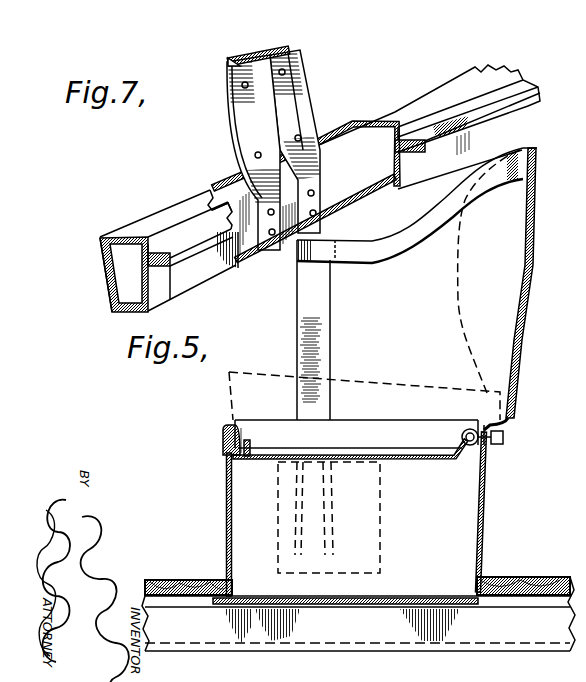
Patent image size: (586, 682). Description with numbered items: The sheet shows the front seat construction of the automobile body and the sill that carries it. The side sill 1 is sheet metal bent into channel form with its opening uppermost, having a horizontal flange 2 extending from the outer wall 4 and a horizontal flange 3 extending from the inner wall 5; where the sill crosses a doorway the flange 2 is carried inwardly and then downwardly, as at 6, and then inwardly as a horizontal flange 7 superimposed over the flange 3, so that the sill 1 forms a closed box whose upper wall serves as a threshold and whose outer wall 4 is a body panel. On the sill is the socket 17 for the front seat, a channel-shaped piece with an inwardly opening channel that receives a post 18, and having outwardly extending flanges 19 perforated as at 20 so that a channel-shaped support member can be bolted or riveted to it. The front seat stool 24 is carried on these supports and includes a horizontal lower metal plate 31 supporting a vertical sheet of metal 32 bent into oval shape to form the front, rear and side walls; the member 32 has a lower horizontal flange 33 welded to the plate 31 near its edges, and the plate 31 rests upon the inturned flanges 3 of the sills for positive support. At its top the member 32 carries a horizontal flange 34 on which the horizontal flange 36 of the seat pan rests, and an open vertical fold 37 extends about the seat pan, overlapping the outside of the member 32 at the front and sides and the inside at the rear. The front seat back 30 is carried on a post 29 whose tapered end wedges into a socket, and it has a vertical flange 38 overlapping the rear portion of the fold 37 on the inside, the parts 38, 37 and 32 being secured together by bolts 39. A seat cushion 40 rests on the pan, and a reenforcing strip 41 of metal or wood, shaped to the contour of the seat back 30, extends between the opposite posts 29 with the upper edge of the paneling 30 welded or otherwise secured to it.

In FIG. 7, the side sill 1 is at (112, 300).
In FIG. 5, the side sill 1 is at (465, 632).
In FIG. 7, the horizontal flange 2 is at (165, 215).
In FIG. 7, the horizontal flange 3 is at (208, 248).
In FIG. 7, the outer wall 4 is at (105, 267).
In FIG. 7, the inner wall 5 is at (188, 274).
In FIG. 7, the downward extension 6 is at (155, 237).
In FIG. 7, the horizontal flange 7 is at (217, 229).
In FIG. 7, the socket 17 is at (239, 56).
In FIG. 5, the post 18 is at (580, 356).
In FIG. 7, the outwardly extending flange 19 is at (230, 103).
In FIG. 7, the perforation 20 is at (230, 74).
In FIG. 5, the front seat stool 24 is at (423, 533).
In FIG. 5, the post 29 is at (313, 322).
In FIG. 5, the front seat back 30 is at (530, 290).
In FIG. 5, the lower metal plate 31 is at (440, 597).
In FIG. 5, the vertical sheet of metal 32 is at (227, 505).
In FIG. 5, the lower horizontal flange 33 is at (210, 580).
In FIG. 5, the horizontal flange 34 is at (238, 457).
In FIG. 5, the horizontal flange 36 is at (248, 448).
In FIG. 5, the open vertical fold 37 is at (224, 438).
In FIG. 5, the vertical flange 38 is at (476, 428).
In FIG. 5, the bolt 39 is at (503, 437).
In FIG. 5, the seat cushion 40 is at (238, 402).
In FIG. 5, the reenforcing strip 41 is at (527, 148).